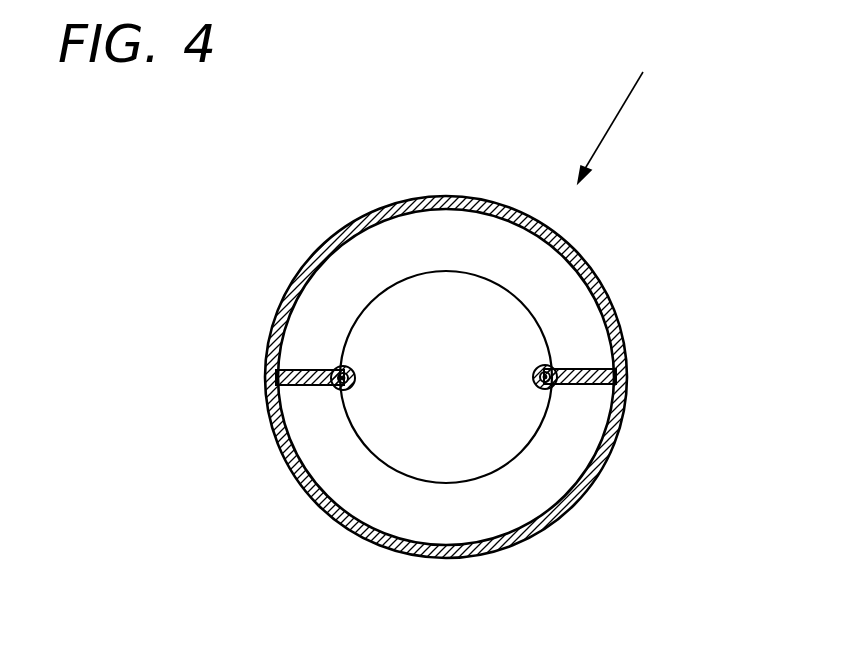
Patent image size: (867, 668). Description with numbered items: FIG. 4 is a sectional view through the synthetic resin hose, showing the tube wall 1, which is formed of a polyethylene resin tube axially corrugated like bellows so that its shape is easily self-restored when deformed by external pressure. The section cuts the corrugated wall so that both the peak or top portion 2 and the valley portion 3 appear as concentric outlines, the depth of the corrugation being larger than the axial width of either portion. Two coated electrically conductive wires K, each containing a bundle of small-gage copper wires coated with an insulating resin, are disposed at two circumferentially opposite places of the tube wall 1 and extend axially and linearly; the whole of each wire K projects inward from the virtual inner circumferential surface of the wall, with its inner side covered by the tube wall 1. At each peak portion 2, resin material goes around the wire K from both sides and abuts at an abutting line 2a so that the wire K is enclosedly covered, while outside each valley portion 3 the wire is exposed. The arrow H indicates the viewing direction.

The tube wall 1 is at (483, 86).
The top portion 2 is at (392, 199).
The valley portion 3 is at (455, 270).
The abutting line 2a is at (271, 382).
The coated electrically conductive wire K is at (333, 370).
The direction of view H is at (617, 105).